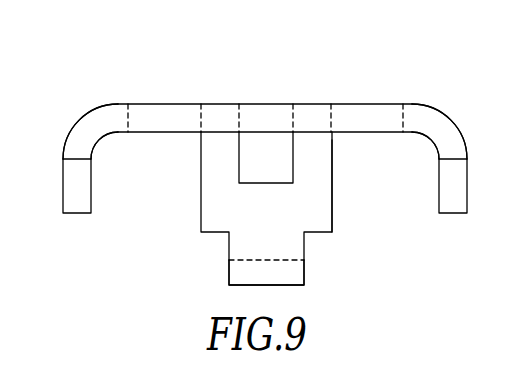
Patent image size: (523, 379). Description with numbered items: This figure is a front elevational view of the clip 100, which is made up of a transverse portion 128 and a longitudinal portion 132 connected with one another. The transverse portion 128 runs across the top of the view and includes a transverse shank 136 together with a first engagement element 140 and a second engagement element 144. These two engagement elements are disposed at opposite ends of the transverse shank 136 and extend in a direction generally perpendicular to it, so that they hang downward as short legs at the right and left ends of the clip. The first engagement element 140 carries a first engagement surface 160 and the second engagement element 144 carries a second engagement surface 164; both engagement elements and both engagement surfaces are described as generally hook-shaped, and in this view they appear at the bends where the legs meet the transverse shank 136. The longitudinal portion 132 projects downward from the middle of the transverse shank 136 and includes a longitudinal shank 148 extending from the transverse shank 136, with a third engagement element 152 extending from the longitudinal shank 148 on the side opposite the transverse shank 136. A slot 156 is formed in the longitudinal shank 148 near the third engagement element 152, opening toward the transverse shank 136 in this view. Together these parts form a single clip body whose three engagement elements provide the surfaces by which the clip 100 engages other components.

The clip 100 is at (162, 91).
The transverse portion 128 is at (362, 90).
The transverse shank 136 is at (285, 104).
The longitudinal portion 132 is at (348, 161).
The longitudinal shank 148 is at (333, 191).
The third engagement element 152 is at (305, 265).
The slot 156 is at (290, 150).
The second engagement element 144 is at (63, 180).
The first engagement element 140 is at (468, 182).
The second engagement surface 164 is at (80, 158).
The first engagement surface 160 is at (452, 158).